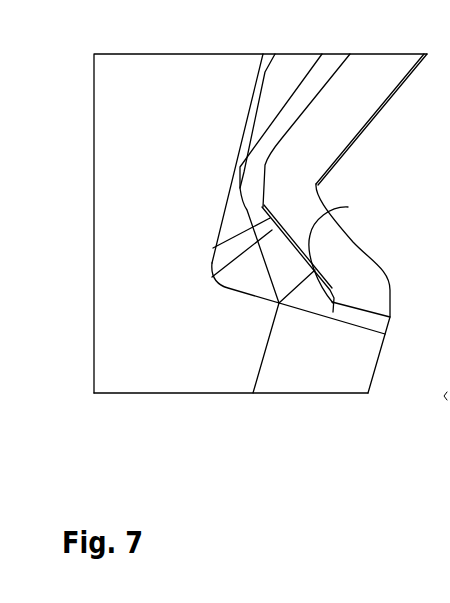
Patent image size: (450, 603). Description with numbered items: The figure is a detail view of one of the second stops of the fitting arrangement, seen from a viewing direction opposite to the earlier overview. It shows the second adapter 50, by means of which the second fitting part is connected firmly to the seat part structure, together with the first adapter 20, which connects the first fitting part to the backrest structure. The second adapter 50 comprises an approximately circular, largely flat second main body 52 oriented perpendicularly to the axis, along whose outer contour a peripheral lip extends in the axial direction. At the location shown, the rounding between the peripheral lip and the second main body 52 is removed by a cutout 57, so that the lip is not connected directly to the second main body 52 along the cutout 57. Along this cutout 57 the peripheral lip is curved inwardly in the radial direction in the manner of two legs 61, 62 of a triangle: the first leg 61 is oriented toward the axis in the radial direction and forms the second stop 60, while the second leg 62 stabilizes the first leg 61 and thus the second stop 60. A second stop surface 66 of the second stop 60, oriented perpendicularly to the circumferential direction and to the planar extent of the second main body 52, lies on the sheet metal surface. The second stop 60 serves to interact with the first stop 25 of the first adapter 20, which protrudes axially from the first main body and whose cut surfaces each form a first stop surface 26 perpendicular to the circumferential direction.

The first adapter 20 is at (286, 78).
The first stop 25 is at (246, 280).
The first stop surface 26 is at (292, 247).
The second adapter 50 is at (174, 323).
The second main body 52 is at (145, 148).
The cutout 57 is at (323, 80).
The second stop 60 is at (332, 258).
The first leg 61 is at (330, 239).
The second leg 62 is at (334, 120).
The second stop surface 66 is at (348, 207).